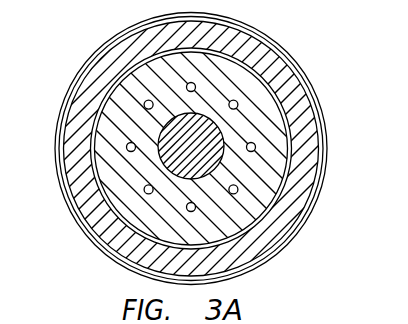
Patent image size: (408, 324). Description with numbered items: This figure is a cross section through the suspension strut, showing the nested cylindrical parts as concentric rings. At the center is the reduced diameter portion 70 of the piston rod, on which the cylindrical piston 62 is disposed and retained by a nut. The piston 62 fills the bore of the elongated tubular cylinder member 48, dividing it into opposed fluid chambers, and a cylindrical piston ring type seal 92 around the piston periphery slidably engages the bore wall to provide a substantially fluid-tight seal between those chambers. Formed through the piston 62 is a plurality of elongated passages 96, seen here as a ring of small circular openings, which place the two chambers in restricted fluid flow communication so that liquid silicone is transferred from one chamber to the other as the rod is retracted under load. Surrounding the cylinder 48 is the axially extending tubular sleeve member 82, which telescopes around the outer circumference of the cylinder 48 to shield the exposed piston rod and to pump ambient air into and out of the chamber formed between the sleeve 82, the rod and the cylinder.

The cylinder member 48 is at (304, 106).
The piston 62 is at (277, 133).
The reduced diameter portion 70 is at (131, 62).
The tubular sleeve member 82 is at (327, 180).
The piston ring type seal 92 is at (288, 74).
The elongated passages 96 is at (237, 101).